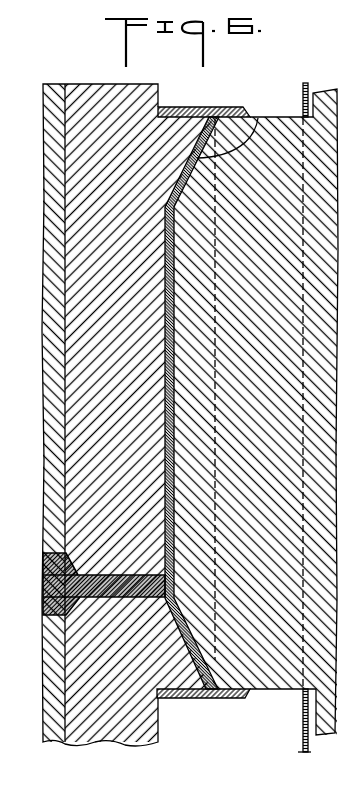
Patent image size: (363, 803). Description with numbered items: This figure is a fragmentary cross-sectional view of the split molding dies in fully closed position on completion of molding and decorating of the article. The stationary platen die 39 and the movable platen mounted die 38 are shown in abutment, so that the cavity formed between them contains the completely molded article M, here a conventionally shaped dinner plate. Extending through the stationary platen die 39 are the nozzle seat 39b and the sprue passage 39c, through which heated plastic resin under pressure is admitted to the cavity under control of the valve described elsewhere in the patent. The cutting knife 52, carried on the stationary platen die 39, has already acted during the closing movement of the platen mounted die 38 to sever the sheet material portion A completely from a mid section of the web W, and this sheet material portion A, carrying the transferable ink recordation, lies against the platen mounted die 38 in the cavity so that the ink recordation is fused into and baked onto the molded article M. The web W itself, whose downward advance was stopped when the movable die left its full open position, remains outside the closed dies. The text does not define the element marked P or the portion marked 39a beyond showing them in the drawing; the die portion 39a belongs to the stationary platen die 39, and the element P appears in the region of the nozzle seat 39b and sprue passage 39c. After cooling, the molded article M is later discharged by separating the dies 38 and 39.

The stationary platen die 39 is at (85, 152).
The platen mounted die 38 is at (290, 268).
The molded article M is at (158, 316).
The cutting knife 52 is at (196, 107).
The sheet material portion A is at (258, 118).
The web W is at (310, 88).
The plug P is at (44, 592).
The nozzle seat 39b is at (46, 567).
The sprue passage 39c is at (117, 618).
The block side portion 39a is at (337, 600).